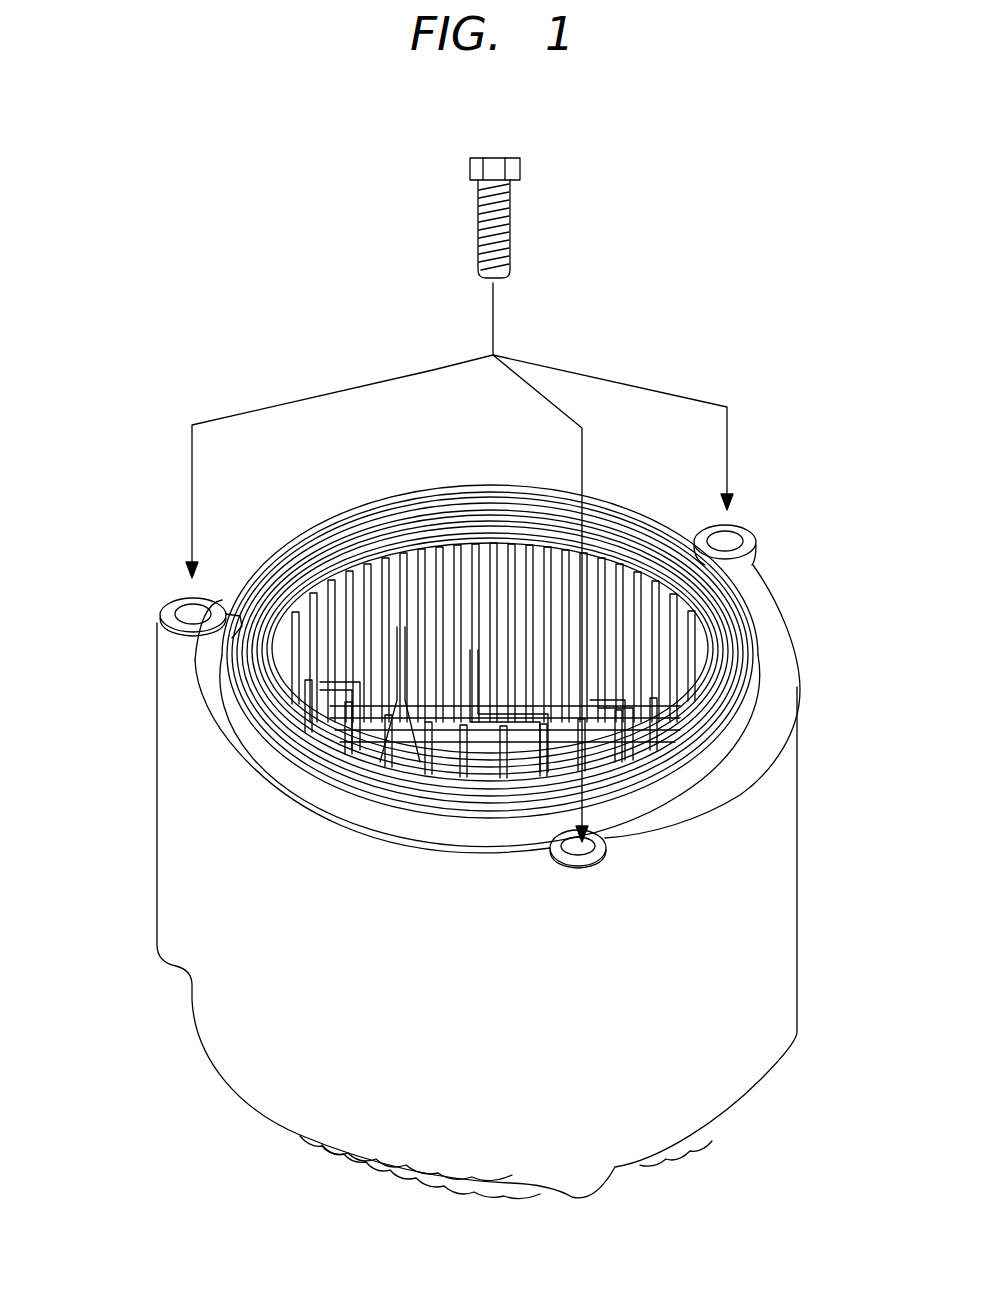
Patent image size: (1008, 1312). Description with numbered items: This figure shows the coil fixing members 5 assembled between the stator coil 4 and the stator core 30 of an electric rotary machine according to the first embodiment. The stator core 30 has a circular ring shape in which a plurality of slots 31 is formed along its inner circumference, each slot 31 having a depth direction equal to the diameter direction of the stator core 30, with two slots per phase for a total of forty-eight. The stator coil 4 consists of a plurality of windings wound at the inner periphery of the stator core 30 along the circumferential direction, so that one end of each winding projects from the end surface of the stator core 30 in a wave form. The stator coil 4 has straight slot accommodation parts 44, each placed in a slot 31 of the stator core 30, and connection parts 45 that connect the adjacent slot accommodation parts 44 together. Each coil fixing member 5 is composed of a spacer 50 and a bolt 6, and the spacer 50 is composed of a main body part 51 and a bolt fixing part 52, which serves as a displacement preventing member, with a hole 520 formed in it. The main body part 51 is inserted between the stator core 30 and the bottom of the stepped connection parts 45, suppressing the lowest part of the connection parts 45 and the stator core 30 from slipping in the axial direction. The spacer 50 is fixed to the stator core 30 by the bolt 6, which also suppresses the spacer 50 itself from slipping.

The stator coil 4 is at (519, 697).
The connection part 45 is at (753, 563).
The slot accommodation part 44 is at (532, 697).
The stator core 30 is at (783, 637).
The slot 31 is at (650, 792).
The coil fixing member 5 is at (808, 200).
The bolt 6 is at (512, 222).
The spacer 50 is at (422, 639).
The main body part 51 is at (141, 611).
The bolt fixing part 52 is at (163, 606).
The bolt hole 520 is at (200, 633).